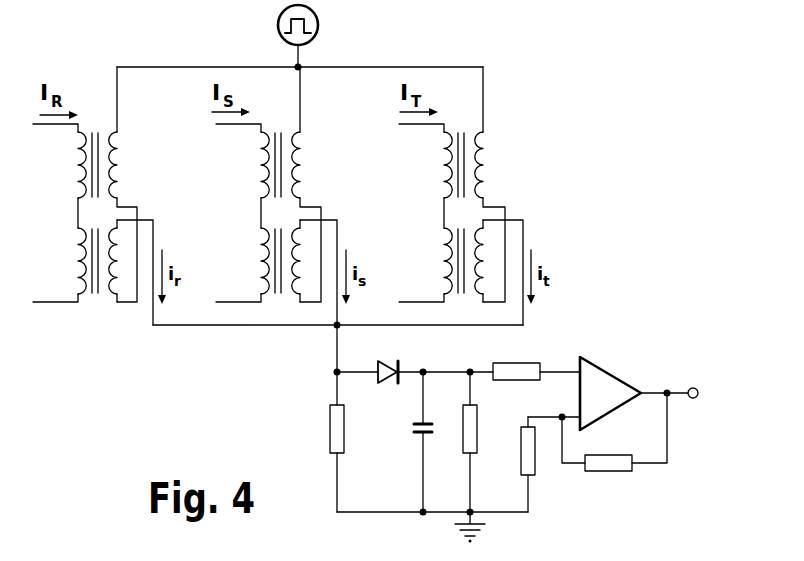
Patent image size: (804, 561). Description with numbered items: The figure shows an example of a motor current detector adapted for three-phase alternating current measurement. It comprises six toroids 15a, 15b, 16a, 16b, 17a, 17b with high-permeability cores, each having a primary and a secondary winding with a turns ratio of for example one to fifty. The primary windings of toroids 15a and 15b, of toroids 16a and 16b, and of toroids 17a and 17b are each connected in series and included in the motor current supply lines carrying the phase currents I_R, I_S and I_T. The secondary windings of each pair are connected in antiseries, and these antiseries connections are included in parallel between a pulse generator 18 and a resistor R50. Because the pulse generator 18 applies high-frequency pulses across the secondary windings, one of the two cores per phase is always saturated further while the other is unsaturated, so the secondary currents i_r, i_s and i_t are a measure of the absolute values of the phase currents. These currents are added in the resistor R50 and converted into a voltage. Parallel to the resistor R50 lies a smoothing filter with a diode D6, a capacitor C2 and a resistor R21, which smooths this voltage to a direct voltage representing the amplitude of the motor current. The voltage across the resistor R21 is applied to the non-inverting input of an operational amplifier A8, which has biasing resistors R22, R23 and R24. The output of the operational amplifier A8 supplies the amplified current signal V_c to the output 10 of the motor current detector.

The toroid 15a is at (66, 163).
The toroid 15b is at (66, 256).
The toroid 16a is at (249, 163).
The toroid 16b is at (249, 256).
The toroid 17a is at (432, 163).
The toroid 17b is at (432, 256).
The pulse generator 18 is at (318, 22).
The output 10 is at (693, 398).
The diode D6 is at (386, 366).
The capacitor C2 is at (417, 432).
The resistor R50 is at (328, 441).
The resistor R21 is at (460, 438).
The biasing resistor R22 is at (522, 362).
The biasing resistor R23 is at (517, 464).
The biasing resistor R24 is at (614, 472).
The operational amplifier A8 is at (620, 406).